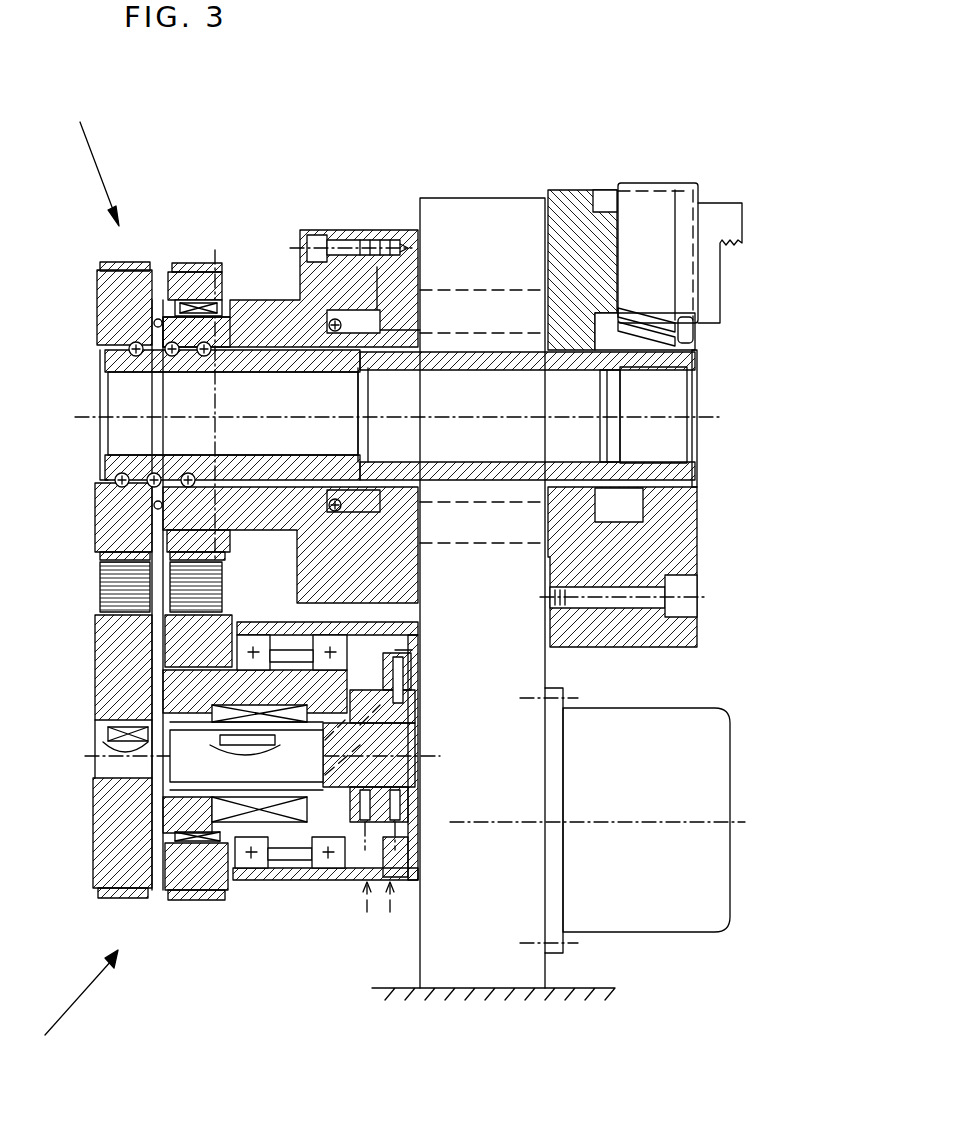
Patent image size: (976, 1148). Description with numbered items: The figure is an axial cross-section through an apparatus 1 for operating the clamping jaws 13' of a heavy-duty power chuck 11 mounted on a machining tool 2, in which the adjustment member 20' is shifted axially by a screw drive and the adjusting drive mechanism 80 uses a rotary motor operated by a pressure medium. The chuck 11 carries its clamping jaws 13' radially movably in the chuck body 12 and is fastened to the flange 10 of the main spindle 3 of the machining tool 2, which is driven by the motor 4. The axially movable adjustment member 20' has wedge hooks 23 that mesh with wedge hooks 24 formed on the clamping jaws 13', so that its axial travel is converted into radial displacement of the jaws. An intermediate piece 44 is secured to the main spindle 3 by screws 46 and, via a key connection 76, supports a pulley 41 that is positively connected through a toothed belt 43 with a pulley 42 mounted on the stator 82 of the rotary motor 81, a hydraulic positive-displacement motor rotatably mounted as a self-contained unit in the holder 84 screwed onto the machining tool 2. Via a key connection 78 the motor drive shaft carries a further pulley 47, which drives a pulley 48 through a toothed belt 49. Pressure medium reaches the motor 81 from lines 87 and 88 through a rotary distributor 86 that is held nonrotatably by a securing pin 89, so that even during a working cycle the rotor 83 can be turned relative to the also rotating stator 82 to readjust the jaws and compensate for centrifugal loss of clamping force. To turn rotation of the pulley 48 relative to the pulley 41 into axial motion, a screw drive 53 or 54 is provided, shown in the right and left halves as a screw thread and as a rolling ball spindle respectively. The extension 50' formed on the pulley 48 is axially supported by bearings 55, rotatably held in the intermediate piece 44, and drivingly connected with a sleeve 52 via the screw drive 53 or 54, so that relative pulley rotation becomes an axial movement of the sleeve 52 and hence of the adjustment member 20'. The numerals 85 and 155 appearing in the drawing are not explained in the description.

The apparatus 1 is at (95, 161).
The machining tool 2 is at (505, 196).
The main spindle 3 is at (433, 300).
The motor 4 is at (677, 935).
The flange 10 is at (570, 210).
The power chuck 11 is at (695, 538).
The chuck body 12 is at (660, 628).
The clamping jaws 13' is at (690, 216).
The adjustment member 20' is at (571, 418).
The wedge hooks 23 is at (672, 322).
The wedge hooks 24 is at (652, 366).
The pulley 41 is at (195, 282).
The pulley 42 is at (190, 880).
The toothed belt 43 is at (170, 596).
The intermediate piece 44 is at (280, 300).
The screws 46 is at (320, 232).
The pulley 47 is at (112, 835).
The pulley 48 is at (100, 292).
The toothed belt 49 is at (105, 575).
The extension 50' is at (206, 260).
The sleeve 52 is at (190, 362).
The screw drive 53 is at (285, 465).
The screw drive 54 is at (142, 360).
The bearings 55 is at (155, 505).
The key connection 76 is at (172, 298).
The key connection 78 is at (140, 722).
The adjusting drive mechanism 80 is at (77, 999).
The rotary motor 81 is at (258, 878).
The stator 82 is at (298, 835).
The rotor 83 is at (165, 780).
The holder 84 is at (282, 878).
The roller 85 is at (330, 870).
The rotary distributor 86 is at (405, 712).
The line 87 is at (362, 908).
The line 88 is at (388, 908).
The securing pin 89 is at (400, 666).
The intermediate body 155 is at (295, 625).